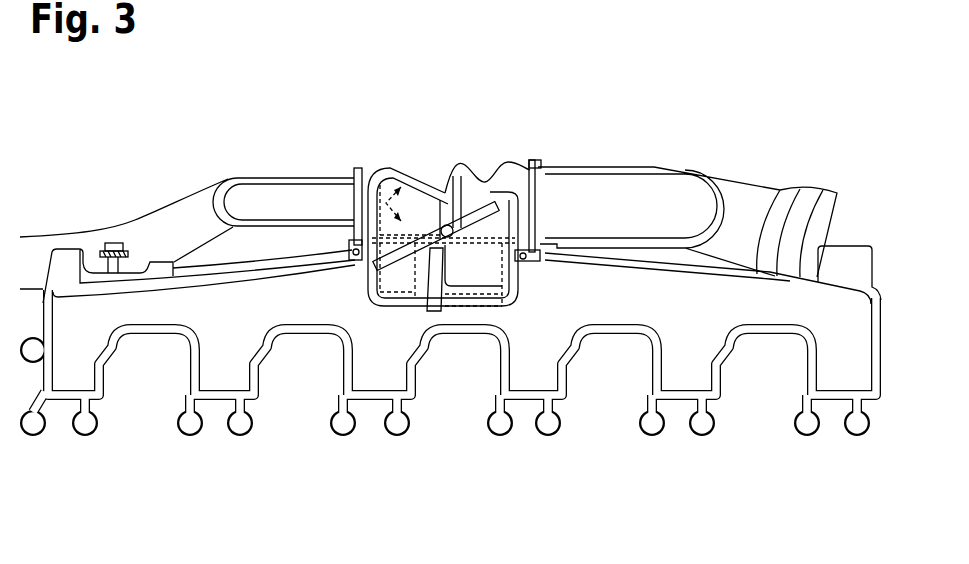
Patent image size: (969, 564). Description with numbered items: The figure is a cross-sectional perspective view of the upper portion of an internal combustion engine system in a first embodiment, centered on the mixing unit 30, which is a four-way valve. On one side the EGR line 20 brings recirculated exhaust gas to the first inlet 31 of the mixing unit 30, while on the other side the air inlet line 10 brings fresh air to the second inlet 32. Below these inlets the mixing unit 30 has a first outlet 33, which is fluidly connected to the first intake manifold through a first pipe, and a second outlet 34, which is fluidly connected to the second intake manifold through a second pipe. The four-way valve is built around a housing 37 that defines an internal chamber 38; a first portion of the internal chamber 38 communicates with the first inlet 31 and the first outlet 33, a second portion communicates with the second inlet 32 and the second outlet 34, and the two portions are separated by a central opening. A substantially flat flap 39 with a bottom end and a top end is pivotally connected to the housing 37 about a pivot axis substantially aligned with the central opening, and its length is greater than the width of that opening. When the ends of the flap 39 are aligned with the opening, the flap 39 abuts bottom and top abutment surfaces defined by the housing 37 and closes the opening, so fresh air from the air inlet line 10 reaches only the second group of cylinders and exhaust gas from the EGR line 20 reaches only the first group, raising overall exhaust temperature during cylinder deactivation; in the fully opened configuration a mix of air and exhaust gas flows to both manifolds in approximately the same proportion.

The air inlet line 10 is at (627, 198).
The EGR line 20 is at (274, 197).
The mixing unit 30 is at (446, 292).
The first inlet 31 is at (345, 195).
The second inlet 32 is at (549, 200).
The first outlet 33 is at (354, 311).
The second outlet 34 is at (533, 312).
The housing 37 is at (431, 152).
The internal chamber 38 is at (389, 208).
The flap 39 is at (428, 300).